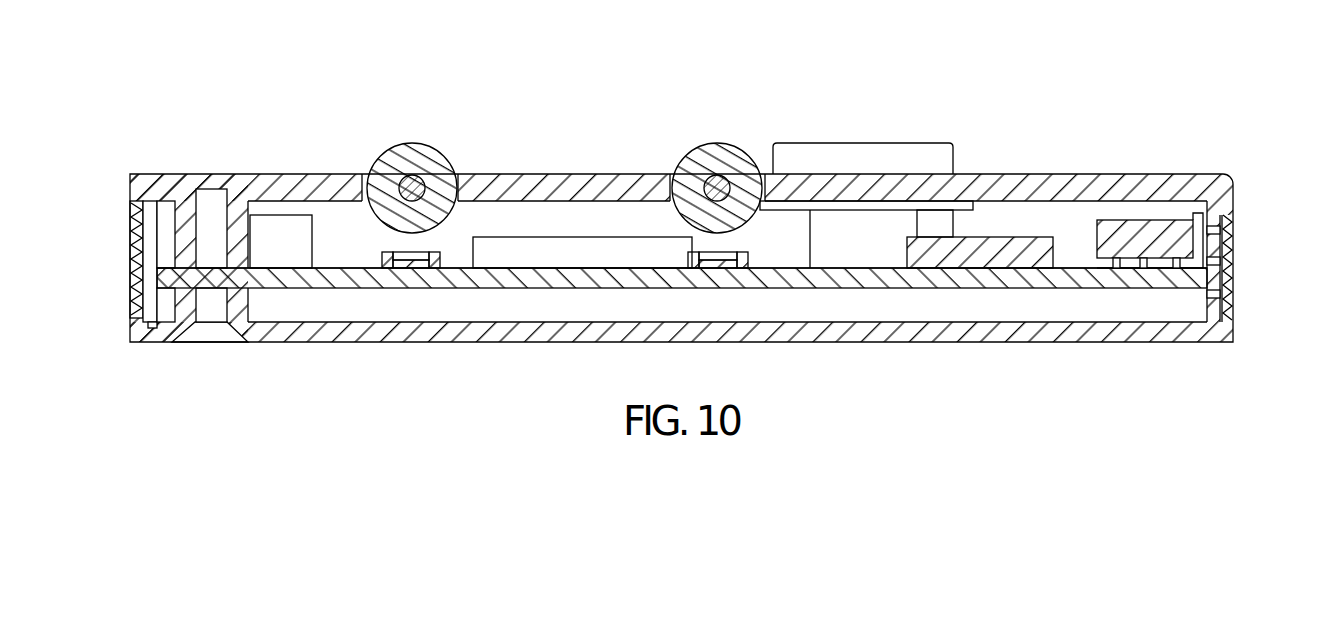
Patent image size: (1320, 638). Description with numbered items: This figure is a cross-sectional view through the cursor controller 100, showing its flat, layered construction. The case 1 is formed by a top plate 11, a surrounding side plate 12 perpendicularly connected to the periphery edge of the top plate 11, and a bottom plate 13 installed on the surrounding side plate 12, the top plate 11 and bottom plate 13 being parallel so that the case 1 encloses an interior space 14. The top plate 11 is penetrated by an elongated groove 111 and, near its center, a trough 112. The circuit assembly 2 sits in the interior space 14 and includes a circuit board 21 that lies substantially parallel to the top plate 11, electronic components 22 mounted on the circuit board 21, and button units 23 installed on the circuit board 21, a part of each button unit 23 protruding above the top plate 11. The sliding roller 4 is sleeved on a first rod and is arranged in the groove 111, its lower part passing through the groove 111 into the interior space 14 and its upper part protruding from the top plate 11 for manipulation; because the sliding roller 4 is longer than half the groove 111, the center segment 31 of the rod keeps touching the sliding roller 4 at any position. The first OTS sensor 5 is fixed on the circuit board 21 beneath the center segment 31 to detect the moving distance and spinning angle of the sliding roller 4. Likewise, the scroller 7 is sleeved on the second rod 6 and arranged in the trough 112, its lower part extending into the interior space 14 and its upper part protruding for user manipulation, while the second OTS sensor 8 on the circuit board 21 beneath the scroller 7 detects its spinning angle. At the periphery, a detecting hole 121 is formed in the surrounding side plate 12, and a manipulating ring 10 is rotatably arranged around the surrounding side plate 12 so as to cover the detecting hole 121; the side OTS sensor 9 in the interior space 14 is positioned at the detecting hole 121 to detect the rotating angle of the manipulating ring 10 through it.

The cursor controller 100 is at (170, 93).
The case 1 is at (712, 255).
The manipulating ring 10 is at (1233, 265).
The top plate 11 is at (681, 153).
The groove 111 is at (363, 175).
The trough 112 is at (670, 175).
The surrounding side plate 12 is at (1213, 297).
The detecting hole 121 is at (1217, 235).
The bottom plate 13 is at (1093, 333).
The interior space 14 is at (1017, 220).
The circuit assembly 2 is at (682, 295).
The circuit board 21 is at (1078, 275).
The electronic components 22 is at (912, 251).
The button units 23 is at (863, 160).
The center segment 31 is at (407, 174).
The sliding roller 4 is at (426, 164).
The first OTS sensor 5 is at (381, 251).
The second rod 6 is at (716, 174).
The scroller 7 is at (731, 164).
The second OTS sensor 8 is at (750, 251).
The side OTS sensor 9 is at (1158, 218).